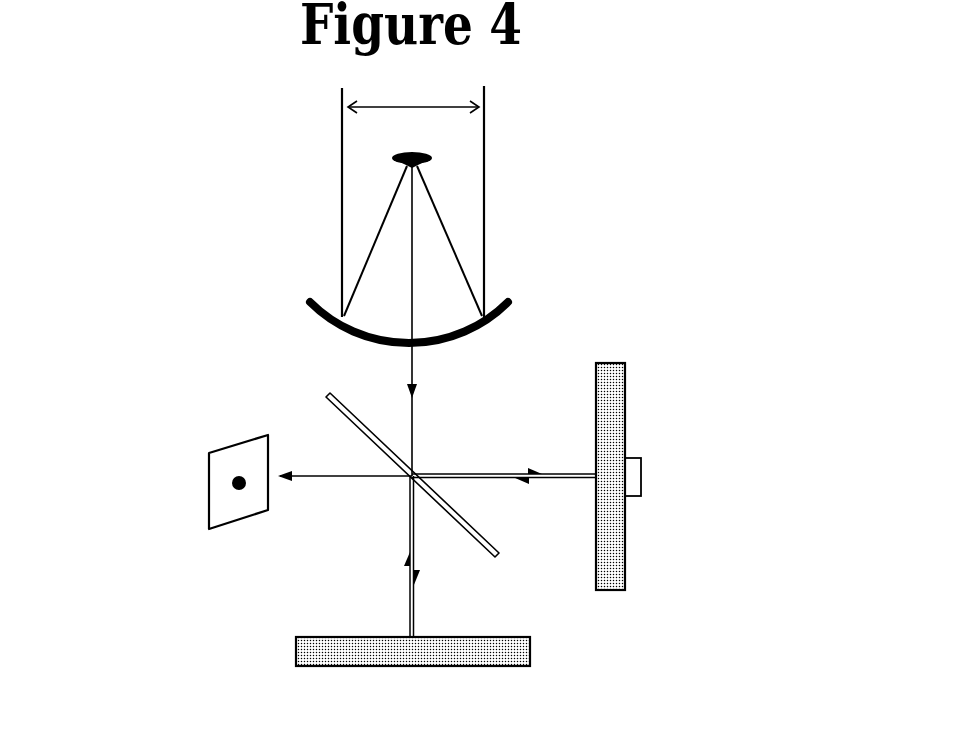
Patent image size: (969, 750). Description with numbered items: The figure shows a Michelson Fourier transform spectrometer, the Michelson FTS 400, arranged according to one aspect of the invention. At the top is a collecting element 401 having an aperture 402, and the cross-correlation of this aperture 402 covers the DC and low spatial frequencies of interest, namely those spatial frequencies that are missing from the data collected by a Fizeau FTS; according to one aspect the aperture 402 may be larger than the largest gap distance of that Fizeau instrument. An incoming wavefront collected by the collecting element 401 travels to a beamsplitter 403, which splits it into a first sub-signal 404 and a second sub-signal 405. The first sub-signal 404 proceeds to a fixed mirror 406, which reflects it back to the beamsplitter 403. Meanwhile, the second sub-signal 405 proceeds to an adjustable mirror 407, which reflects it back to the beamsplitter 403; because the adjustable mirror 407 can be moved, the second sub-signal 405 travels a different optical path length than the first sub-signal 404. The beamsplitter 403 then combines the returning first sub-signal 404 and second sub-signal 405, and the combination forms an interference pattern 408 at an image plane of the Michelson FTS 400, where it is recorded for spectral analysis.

The Michelson FTS 400 is at (104, 225).
The collecting element 401 is at (312, 340).
The aperture 402 is at (430, 108).
The beamsplitter 403 is at (316, 391).
The first sub-signal 404 is at (390, 545).
The second sub-signal 405 is at (523, 452).
The fixed mirror 406 is at (295, 650).
The adjustable mirror 407 is at (607, 593).
The interference pattern 408 is at (208, 490).